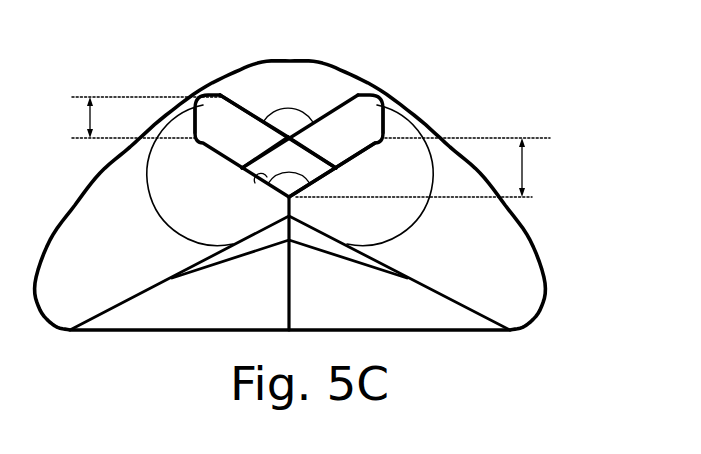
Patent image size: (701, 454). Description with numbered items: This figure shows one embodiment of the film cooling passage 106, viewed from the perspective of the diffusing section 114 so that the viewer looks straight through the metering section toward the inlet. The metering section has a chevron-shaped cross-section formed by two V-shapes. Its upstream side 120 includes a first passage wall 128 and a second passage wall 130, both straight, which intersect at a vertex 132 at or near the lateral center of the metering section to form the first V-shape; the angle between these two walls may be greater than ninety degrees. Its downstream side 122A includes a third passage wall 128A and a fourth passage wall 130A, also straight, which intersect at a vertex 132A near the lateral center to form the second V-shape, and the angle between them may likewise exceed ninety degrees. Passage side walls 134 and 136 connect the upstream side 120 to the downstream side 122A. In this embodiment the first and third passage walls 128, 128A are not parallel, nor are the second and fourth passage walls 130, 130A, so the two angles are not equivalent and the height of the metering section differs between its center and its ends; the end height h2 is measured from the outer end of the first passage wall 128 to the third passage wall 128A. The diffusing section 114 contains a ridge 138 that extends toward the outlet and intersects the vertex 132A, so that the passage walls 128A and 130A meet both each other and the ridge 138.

The film cooling passage 106 is at (503, 273).
The diffusing section 114 is at (407, 210).
The upstream side 120 is at (253, 108).
The downstream side 122A is at (258, 185).
The first passage wall 128 is at (229, 158).
The third passage wall 128A is at (237, 167).
The second passage wall 130 is at (340, 99).
The fourth passage wall 130A is at (328, 166).
The vertex 132 is at (330, 172).
The vertex 132A is at (297, 199).
The passage side wall 134 is at (193, 110).
The passage side wall 136 is at (384, 117).
The ridge 138 is at (290, 302).
The height at end of metering section h2 is at (548, 164).